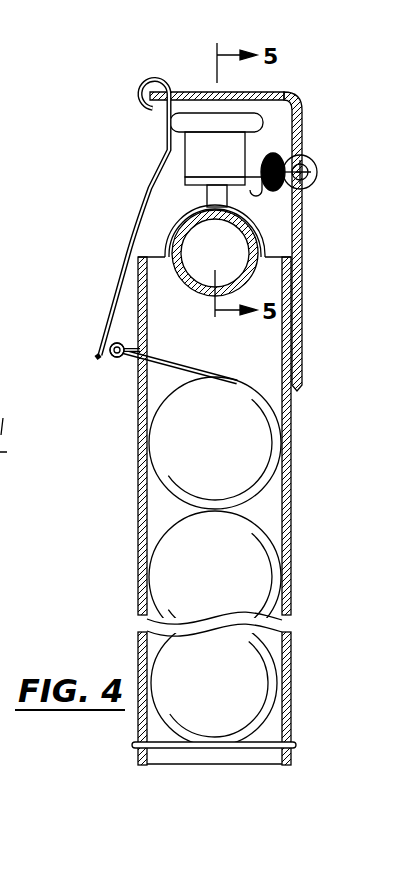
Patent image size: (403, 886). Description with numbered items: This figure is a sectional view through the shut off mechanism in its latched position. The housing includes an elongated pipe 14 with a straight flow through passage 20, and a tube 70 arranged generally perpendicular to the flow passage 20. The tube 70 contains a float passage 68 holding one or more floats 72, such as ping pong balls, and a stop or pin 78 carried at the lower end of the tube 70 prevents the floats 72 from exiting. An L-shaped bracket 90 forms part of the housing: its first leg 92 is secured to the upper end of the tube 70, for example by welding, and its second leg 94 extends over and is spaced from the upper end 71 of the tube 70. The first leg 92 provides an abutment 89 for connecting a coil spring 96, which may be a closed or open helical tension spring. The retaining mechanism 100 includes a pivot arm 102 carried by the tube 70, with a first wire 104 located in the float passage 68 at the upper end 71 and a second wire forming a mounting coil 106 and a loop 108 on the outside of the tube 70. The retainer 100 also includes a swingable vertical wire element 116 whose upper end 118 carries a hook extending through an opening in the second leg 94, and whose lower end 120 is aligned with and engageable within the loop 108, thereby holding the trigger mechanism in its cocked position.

The pipe 14 is at (185, 263).
The flow through passage 20 is at (244, 262).
The float passage 68 is at (200, 511).
The tube 70 is at (291, 492).
The upper end of the tube 71 is at (138, 283).
The floats 72 is at (252, 677).
The stop or pin 78 is at (152, 735).
The abutment 89 is at (317, 175).
The L-shaped bracket 90 is at (304, 219).
The first leg 92 is at (302, 352).
The second leg 94 is at (200, 92).
The coil spring 96 is at (282, 160).
The retaining mechanism 100 is at (118, 264).
The pivot arm 102 is at (108, 362).
The first wire 104 is at (140, 393).
The mounting coil 106 is at (108, 343).
The loop 108 is at (92, 356).
The wire element 116 is at (148, 190).
The upper end 118 is at (163, 83).
The lower end 120 is at (100, 347).